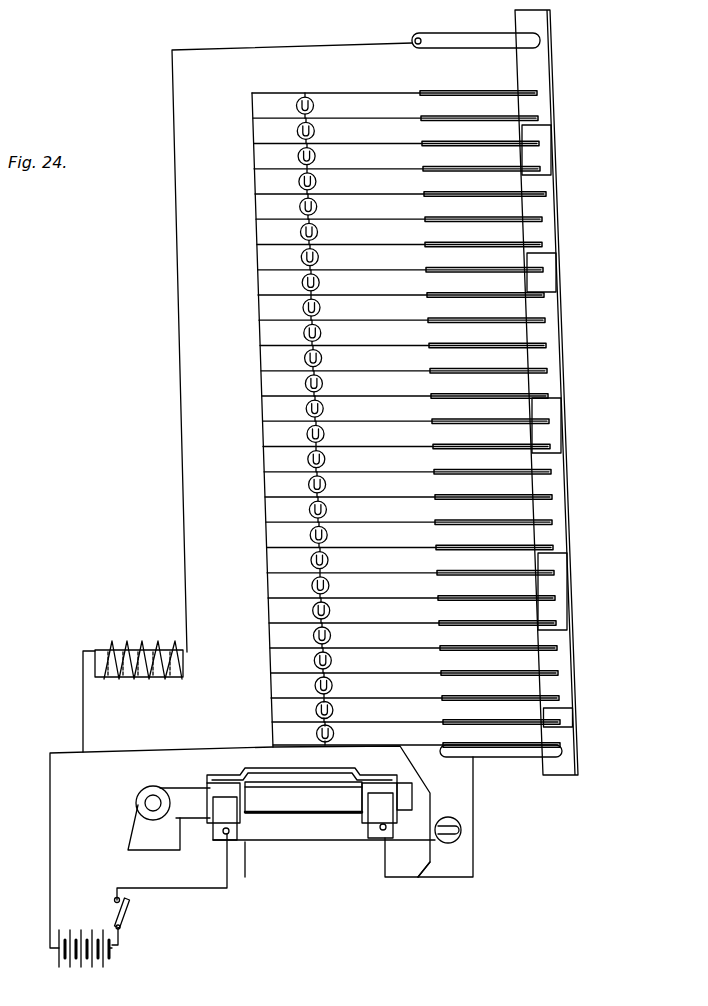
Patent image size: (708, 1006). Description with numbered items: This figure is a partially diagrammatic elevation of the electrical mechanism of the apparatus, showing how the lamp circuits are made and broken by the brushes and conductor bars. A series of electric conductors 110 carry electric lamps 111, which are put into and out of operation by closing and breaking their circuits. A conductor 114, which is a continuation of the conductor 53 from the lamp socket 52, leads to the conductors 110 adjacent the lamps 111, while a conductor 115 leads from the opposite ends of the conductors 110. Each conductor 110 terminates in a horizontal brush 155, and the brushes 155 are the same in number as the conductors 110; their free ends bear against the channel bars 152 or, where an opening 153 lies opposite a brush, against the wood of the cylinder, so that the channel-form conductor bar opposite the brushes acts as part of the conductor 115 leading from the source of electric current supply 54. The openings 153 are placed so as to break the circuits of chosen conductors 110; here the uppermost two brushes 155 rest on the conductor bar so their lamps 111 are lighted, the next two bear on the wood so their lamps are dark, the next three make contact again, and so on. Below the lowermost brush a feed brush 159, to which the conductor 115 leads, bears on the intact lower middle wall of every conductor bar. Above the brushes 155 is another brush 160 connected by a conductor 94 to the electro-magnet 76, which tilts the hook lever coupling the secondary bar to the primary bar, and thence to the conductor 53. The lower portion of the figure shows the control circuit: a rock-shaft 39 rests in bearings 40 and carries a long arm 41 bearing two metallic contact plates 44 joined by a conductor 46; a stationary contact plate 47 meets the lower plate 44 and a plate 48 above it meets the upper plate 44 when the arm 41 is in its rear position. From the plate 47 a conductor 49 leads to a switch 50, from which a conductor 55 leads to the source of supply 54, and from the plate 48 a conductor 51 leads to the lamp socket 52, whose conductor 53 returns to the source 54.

The rock-shaft 39 is at (156, 811).
The bearings 40 is at (145, 842).
The arm 41 is at (305, 805).
The contact plates 44 is at (367, 807).
The conductor 46 is at (299, 771).
The stationary contact plate 47 is at (256, 869).
The contact plate 48 is at (395, 822).
The conductor 49 is at (198, 888).
The switch 50 is at (127, 912).
The conductor 51 is at (395, 877).
The incandescent lamp socket 52 is at (462, 833).
The conductor 53 is at (50, 828).
The source of electric current supply 54 is at (85, 959).
The conductor 55 is at (120, 940).
The electro-magnet 76 is at (131, 648).
The conductor 94 is at (83, 718).
The electric conductors 110 is at (280, 650).
The electric lamps 111 is at (328, 233).
The conductor 114 is at (270, 709).
The conductor 115 is at (437, 885).
The channel bars 152 is at (572, 692).
The openings 153 is at (572, 718).
The brushes 155 is at (552, 690).
The feed brush 159 is at (510, 757).
The brush 160 is at (440, 36).